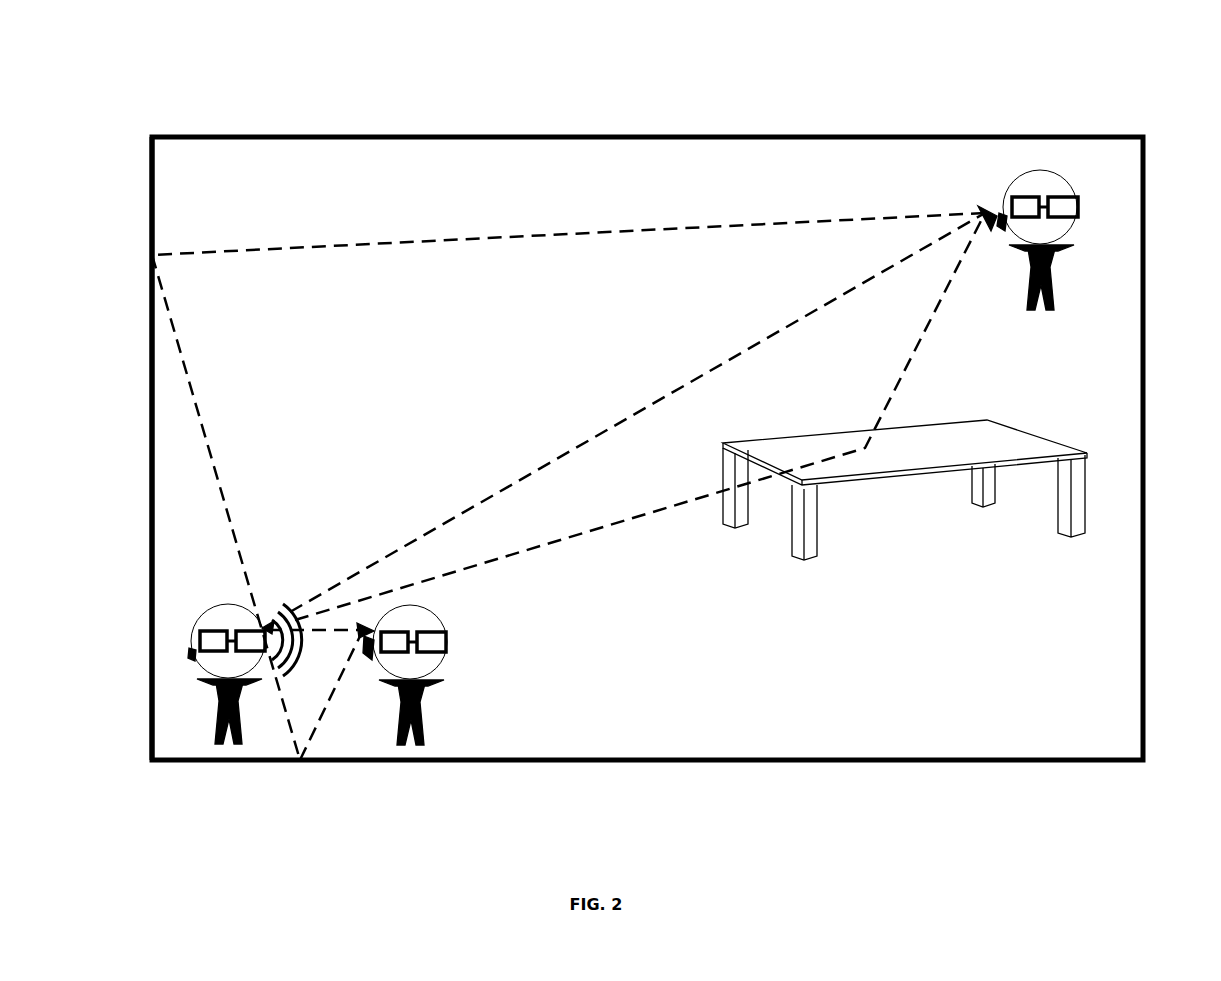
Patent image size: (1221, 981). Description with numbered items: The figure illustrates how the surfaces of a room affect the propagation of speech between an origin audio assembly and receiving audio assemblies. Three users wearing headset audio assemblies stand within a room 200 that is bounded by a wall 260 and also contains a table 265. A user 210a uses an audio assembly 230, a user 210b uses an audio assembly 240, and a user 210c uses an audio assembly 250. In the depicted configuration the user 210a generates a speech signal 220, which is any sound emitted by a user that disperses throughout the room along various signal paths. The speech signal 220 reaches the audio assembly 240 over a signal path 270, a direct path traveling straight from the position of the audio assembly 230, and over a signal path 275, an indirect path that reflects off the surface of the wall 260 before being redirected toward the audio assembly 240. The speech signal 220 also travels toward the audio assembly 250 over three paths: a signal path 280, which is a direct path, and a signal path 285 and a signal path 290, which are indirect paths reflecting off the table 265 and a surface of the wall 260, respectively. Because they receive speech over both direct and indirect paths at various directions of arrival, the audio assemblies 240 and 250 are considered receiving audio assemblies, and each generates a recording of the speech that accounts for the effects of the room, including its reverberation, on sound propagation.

The room 200 is at (647, 448).
The user 210a is at (243, 702).
The user 210b is at (422, 700).
The user 210c is at (1055, 257).
The speech signal 220 is at (285, 615).
The audio assembly 230 is at (192, 652).
The audio assembly 240 is at (448, 638).
The audio assembly 250 is at (1080, 207).
The wall 260 is at (152, 240).
The table 265 is at (905, 490).
The signal path 270 is at (357, 622).
The signal path 275 is at (323, 716).
The signal path 280 is at (643, 409).
The signal path 285 is at (640, 416).
The signal path 290 is at (568, 479).